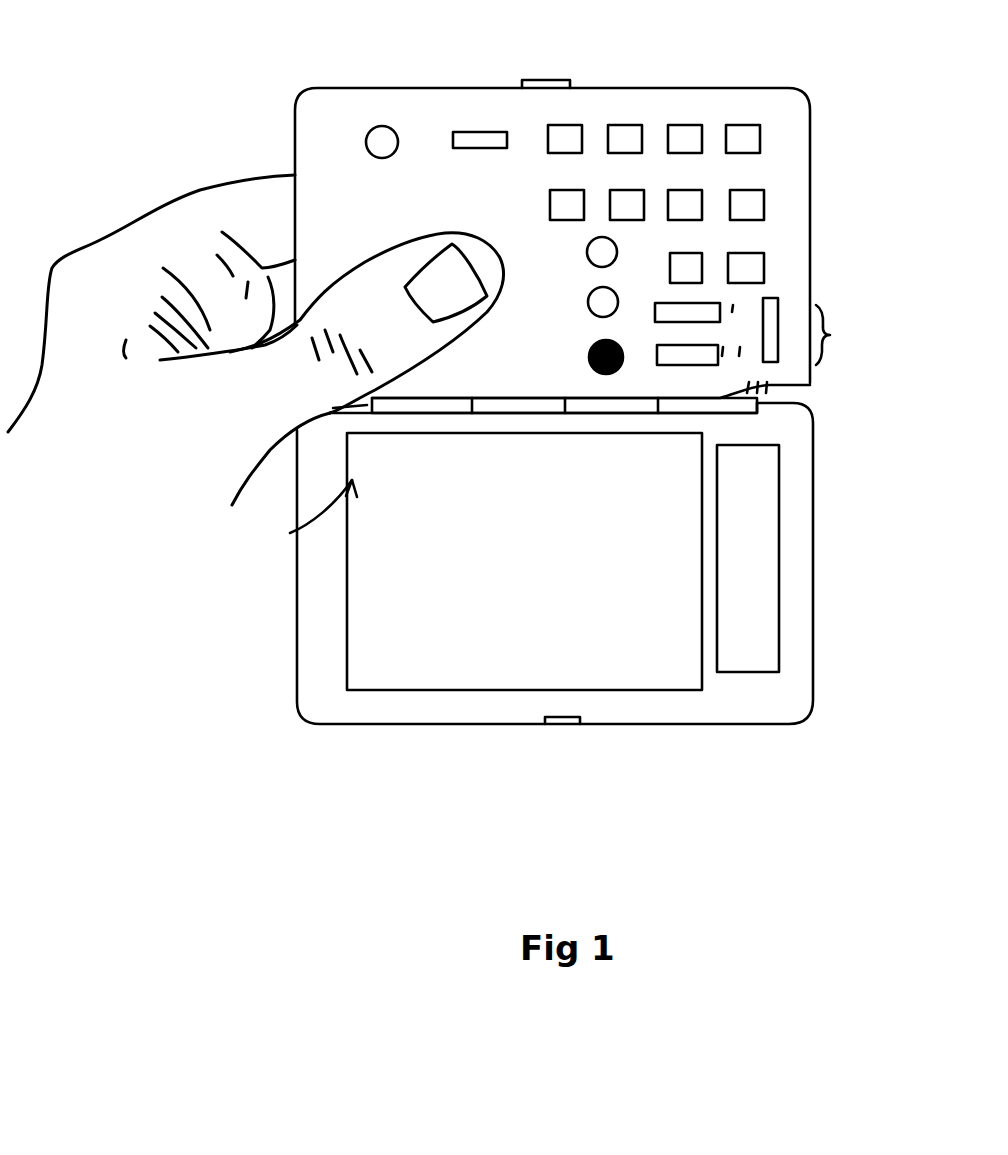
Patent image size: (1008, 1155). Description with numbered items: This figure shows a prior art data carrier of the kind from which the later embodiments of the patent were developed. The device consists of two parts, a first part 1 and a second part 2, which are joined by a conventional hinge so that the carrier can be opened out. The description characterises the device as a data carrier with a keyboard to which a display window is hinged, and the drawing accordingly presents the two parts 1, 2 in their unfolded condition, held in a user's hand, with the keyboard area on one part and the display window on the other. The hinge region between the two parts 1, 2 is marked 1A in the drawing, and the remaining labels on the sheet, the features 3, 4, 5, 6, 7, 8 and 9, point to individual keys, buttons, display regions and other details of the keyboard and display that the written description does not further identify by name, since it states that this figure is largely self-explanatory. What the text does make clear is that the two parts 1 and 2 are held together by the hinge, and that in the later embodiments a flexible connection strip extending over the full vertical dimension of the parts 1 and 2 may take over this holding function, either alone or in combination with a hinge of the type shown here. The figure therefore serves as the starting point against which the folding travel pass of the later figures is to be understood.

The part 1 is at (812, 205).
The hinge 1A is at (800, 385).
The part 2 is at (740, 710).
The keypad keys 3 is at (690, 110).
The side display panel / key 4 is at (588, 254).
The display screen / key 5 is at (590, 303).
The control key 6 is at (485, 148).
The round key 7 is at (382, 158).
The display zone indicator 8 is at (350, 492).
The function keys group 9 is at (830, 333).